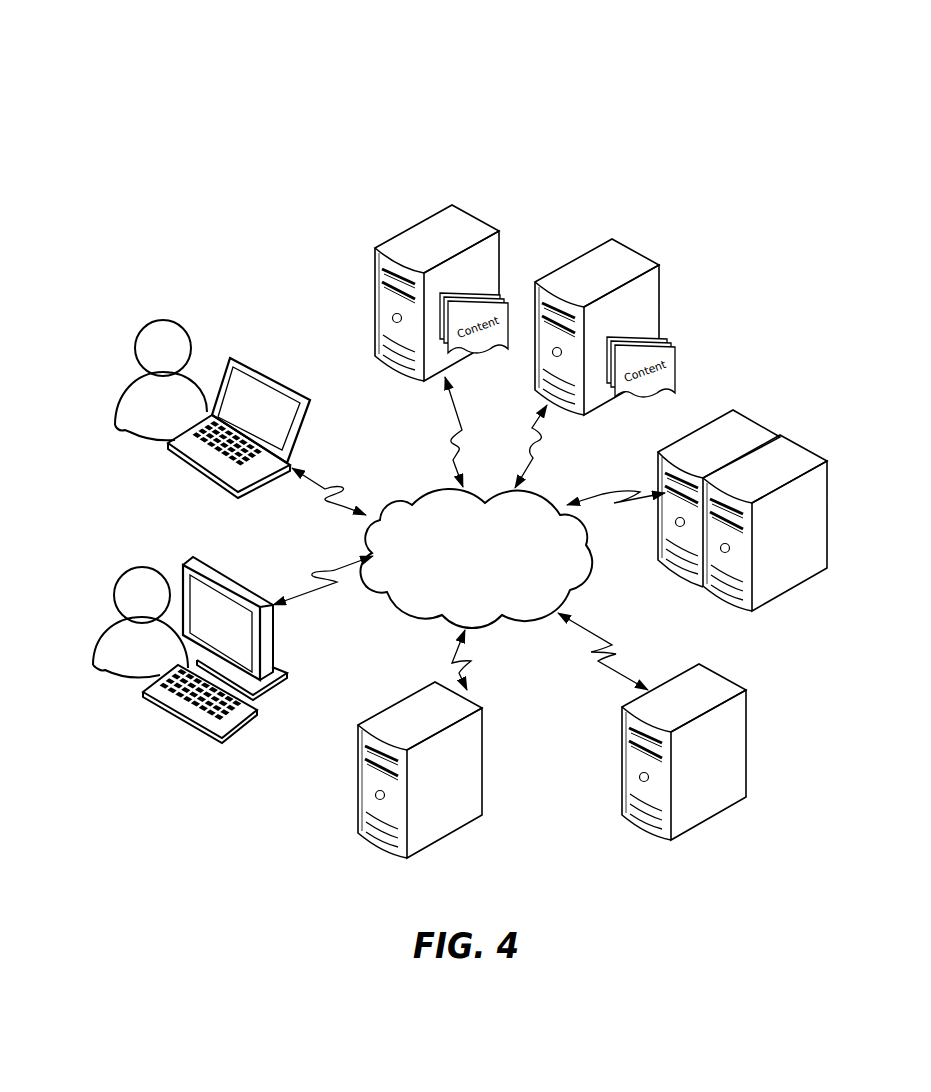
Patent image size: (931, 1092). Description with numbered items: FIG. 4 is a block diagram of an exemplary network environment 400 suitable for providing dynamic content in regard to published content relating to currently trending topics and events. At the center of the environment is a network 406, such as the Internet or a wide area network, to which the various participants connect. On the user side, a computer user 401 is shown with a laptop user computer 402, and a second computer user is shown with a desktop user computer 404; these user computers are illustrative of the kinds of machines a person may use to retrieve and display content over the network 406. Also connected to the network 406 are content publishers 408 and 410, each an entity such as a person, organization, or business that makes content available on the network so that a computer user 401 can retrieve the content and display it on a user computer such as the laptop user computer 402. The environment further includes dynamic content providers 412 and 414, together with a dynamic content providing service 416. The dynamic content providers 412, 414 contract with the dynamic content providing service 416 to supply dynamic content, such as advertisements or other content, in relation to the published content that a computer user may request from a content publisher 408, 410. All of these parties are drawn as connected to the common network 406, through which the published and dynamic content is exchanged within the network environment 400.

The network environment 400 is at (226, 171).
The computer user 401 is at (127, 342).
The user computer 402 is at (263, 373).
The user computer 404 is at (193, 558).
The network 406 is at (476, 558).
The content publisher 408 is at (375, 262).
The content publisher 410 is at (658, 279).
The dynamic content provider 412 is at (358, 788).
The dynamic content provider 414 is at (747, 718).
The dynamic content providing service 416 is at (763, 422).